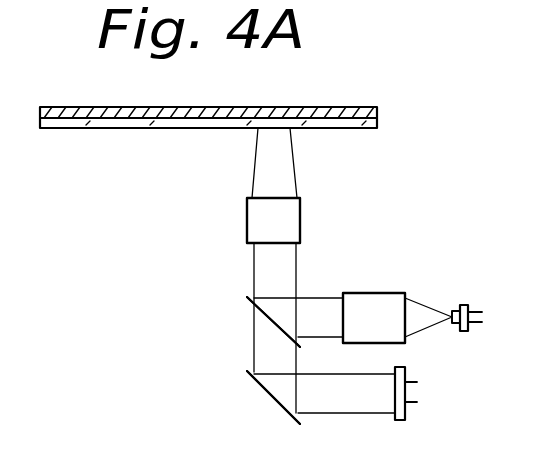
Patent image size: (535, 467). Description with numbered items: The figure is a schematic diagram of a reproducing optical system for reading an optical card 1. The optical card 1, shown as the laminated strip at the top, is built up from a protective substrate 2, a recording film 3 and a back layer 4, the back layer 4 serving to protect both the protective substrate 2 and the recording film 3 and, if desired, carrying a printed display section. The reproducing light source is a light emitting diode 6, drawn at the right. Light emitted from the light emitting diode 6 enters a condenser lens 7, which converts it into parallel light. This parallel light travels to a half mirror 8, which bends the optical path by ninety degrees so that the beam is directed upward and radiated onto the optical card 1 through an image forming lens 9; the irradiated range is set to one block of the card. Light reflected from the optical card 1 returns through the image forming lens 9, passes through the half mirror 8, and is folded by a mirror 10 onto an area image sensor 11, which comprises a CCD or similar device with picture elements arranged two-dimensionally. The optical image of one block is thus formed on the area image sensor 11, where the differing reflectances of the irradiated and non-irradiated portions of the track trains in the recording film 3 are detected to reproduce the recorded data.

The optical card 1 is at (243, 134).
The protective substrate 2 is at (352, 131).
The recording film 3 is at (378, 125).
The back layer 4 is at (379, 110).
The light emitting diode 6 is at (468, 305).
The condenser lens 7 is at (372, 293).
The half mirror 8 is at (248, 303).
The image forming lens 9 is at (247, 225).
The mirror 10 is at (272, 400).
The area image sensor 11 is at (408, 418).